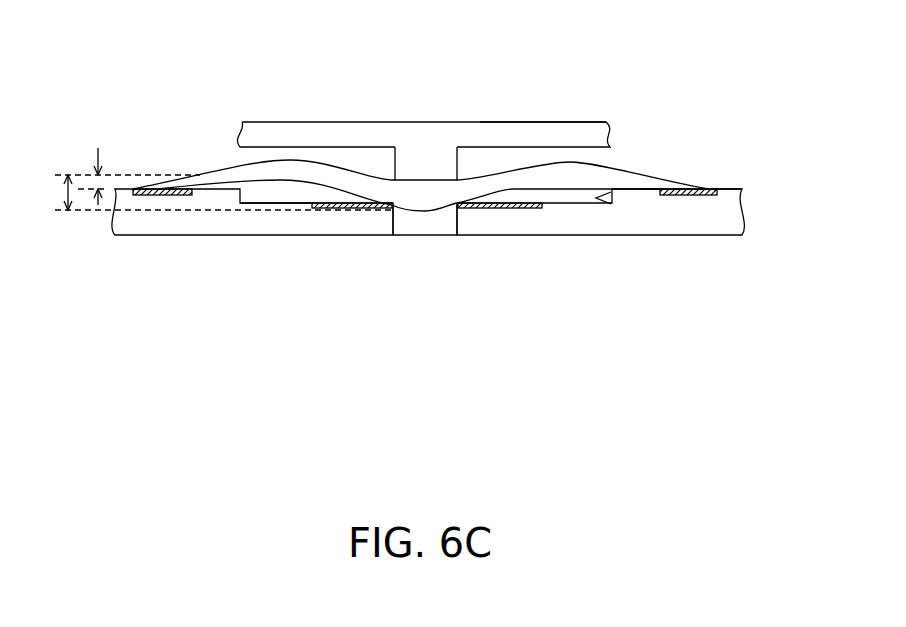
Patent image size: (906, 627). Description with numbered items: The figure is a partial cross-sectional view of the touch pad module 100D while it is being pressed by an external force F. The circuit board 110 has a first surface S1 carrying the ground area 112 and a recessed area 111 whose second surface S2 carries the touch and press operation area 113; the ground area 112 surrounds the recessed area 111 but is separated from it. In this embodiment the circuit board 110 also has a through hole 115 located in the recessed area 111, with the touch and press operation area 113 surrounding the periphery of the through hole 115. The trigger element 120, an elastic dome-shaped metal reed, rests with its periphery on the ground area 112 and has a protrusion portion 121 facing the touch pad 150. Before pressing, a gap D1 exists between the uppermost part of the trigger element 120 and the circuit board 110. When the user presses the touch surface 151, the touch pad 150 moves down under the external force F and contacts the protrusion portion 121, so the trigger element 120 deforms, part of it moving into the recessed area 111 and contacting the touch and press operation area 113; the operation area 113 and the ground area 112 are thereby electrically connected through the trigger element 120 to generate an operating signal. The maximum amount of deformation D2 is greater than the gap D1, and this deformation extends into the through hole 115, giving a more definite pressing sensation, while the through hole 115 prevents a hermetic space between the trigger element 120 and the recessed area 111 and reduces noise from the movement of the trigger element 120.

The circuit board 110 is at (730, 212).
The recessed area 111 is at (615, 200).
The ground area 112 is at (155, 195).
The touch and press operation area 113 is at (333, 209).
The through hole 115 is at (426, 216).
The trigger element 120 is at (620, 176).
The protrusion portion 121 is at (410, 150).
The touch pad 150 is at (505, 130).
The touch surface 151 is at (557, 120).
The external force F is at (425, 121).
The first surface S1 is at (730, 189).
The second surface S2 is at (258, 200).
The gap D1 is at (95, 178).
The maximum amount of deformation D2 is at (212, 192).
The touch pad module 100D is at (772, 367).